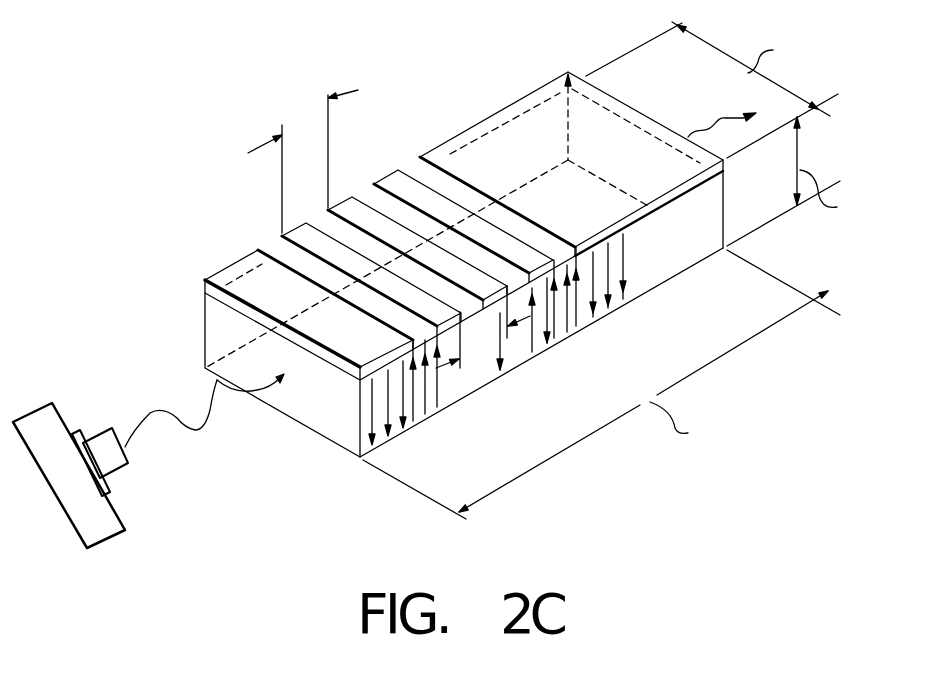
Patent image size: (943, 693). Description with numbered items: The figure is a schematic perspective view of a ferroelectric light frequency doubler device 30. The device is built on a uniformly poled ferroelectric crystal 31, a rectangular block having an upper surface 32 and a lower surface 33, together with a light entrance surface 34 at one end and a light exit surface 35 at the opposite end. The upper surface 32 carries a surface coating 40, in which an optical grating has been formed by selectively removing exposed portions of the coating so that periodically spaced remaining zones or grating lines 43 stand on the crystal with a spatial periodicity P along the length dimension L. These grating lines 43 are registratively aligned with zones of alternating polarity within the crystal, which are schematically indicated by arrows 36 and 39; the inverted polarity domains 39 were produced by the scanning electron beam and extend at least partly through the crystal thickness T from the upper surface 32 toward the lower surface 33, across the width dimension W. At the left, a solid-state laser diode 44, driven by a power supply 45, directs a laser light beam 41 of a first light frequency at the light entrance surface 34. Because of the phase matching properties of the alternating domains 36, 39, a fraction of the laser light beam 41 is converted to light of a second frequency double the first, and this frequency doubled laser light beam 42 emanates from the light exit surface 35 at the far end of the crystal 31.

The ferroelectric light frequency doubler device 30 is at (215, 150).
The ferroelectric crystal 31 is at (200, 315).
The upper surface 32 is at (420, 158).
The lower surface 33 is at (670, 217).
The light entrance surface 34 is at (333, 418).
The light exit surface 35 is at (603, 88).
The alternating polarity domains (arrows) 36 is at (622, 288).
The inverted polarity domains 39 is at (580, 318).
The surface coating 40 is at (553, 112).
The laser light beam 41 is at (193, 430).
The frequency doubled laser light beam 42 is at (717, 122).
The optical grating lines 43 is at (388, 170).
The solid-state laser diode 44 is at (106, 440).
The power supply 45 is at (36, 415).